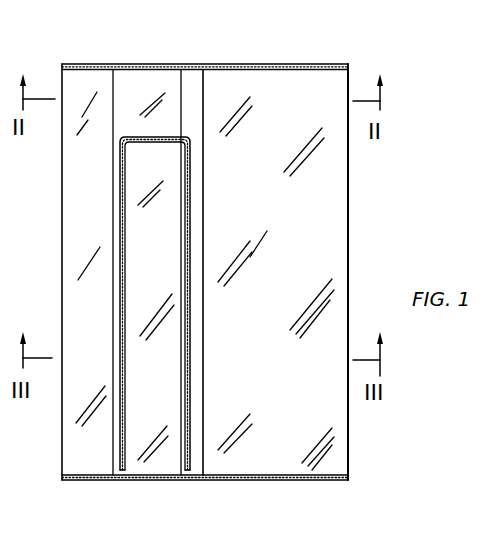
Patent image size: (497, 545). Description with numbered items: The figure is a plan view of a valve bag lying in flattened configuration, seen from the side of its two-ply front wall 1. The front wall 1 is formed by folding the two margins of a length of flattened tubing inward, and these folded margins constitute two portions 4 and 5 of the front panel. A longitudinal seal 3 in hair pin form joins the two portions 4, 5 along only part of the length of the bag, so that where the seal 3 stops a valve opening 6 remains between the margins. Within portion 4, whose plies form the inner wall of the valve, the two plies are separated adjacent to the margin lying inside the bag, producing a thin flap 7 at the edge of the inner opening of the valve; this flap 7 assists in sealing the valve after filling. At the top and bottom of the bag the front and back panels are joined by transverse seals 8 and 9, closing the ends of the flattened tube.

The front wall 1 is at (325, 445).
The longitudinal seal 3 is at (186, 427).
The portion of the front panel 4 is at (66, 226).
The portion of the front panel 5 is at (336, 244).
The valve opening 6 is at (136, 85).
The flap 7 is at (188, 85).
The transverse seal 8 is at (262, 64).
The transverse seal 9 is at (270, 480).